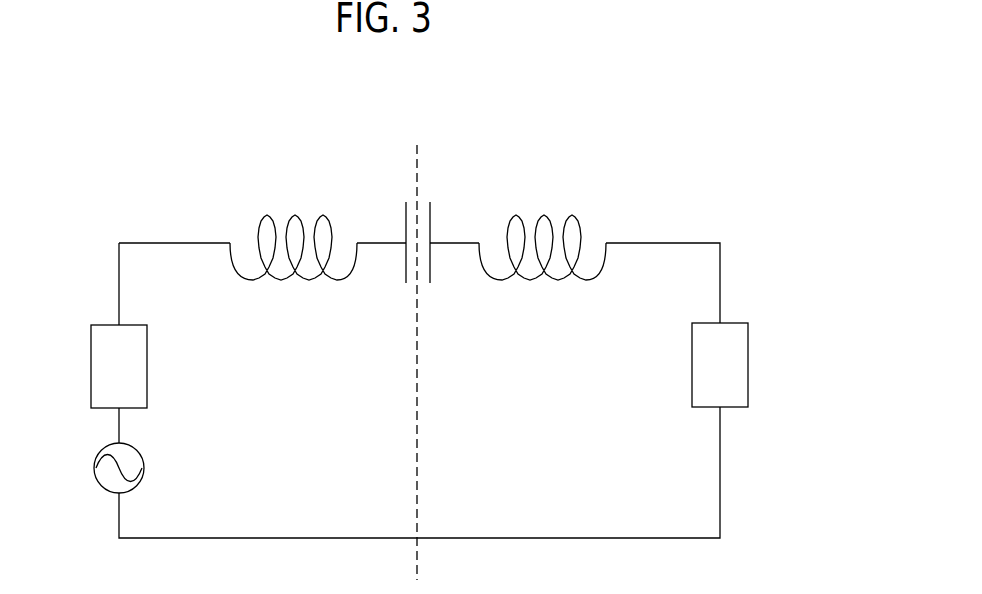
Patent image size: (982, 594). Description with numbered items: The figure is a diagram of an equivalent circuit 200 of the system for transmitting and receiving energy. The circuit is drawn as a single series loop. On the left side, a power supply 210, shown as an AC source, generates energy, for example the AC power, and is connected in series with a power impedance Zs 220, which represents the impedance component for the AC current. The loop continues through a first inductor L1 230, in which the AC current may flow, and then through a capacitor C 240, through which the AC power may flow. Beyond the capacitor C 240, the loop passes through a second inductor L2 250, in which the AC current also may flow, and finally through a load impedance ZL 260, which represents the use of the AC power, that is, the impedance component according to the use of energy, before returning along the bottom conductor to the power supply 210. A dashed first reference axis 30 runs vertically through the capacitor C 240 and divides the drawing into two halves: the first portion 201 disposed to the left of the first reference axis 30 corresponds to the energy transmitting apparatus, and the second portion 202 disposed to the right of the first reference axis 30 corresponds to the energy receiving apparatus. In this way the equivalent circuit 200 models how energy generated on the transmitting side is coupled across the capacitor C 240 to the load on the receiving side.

The wireless power transfer circuit 200 is at (630, 140).
The first portion 201 is at (293, 245).
The second portion 202 is at (542, 244).
The first reference axis 30 is at (418, 159).
The capacitor C 240 is at (430, 216).
The first inductor L1 230 is at (283, 281).
The second inductor L2 250 is at (553, 281).
The power impedance Zs 220 is at (148, 366).
The power supply 210 is at (145, 468).
The load impedance ZL 260 is at (749, 364).